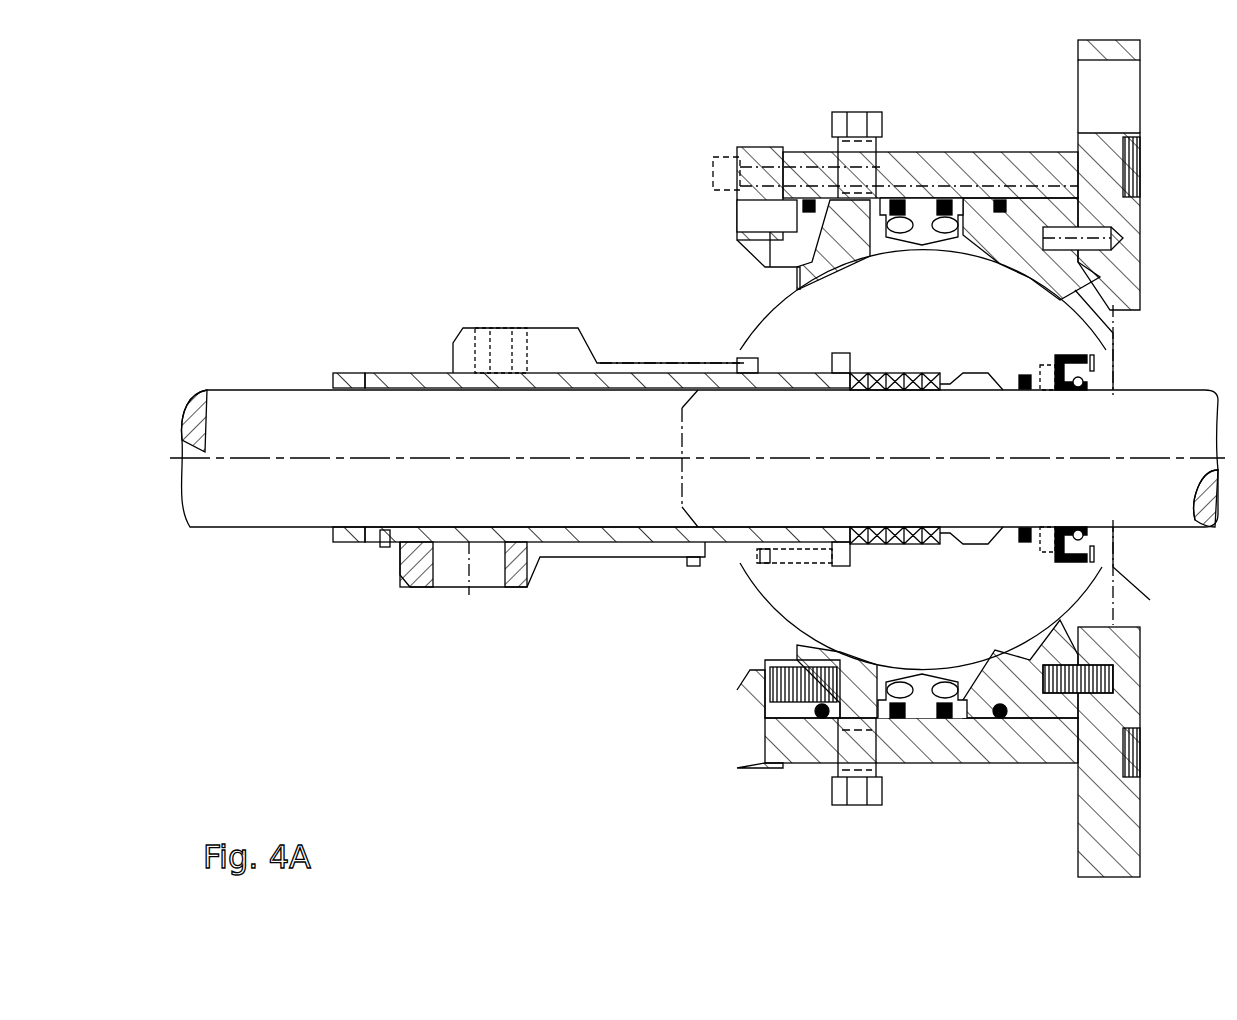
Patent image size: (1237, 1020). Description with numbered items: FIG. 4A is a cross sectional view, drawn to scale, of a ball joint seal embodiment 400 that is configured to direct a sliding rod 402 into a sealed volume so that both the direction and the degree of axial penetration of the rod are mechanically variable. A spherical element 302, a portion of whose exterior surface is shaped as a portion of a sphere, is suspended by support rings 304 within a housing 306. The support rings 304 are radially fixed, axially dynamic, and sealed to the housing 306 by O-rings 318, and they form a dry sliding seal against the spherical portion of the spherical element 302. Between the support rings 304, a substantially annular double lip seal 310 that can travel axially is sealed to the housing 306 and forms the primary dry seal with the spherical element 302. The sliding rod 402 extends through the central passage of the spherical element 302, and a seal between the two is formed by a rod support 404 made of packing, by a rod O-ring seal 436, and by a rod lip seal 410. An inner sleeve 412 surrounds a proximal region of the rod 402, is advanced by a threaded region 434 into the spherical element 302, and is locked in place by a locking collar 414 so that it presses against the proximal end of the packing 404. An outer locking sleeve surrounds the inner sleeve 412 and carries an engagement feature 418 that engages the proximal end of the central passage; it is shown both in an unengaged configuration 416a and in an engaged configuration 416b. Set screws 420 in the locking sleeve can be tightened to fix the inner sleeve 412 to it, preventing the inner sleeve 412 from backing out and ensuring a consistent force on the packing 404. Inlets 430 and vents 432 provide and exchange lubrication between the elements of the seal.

The ball joint seal embodiment 400 is at (687, 127).
The sliding rod 402 is at (697, 458).
The rod support 404 is at (897, 546).
The rod lip seal 410 is at (1095, 540).
The inner sleeve 412 is at (400, 373).
The locking collar 414 is at (340, 373).
The locking sleeve in unengaged configuration 416a is at (407, 587).
The locking sleeve in engaged configuration 416b is at (592, 330).
The engagement feature 418 is at (695, 566).
The set screws 420 is at (502, 328).
The inlets 430 is at (860, 808).
The vents 432 is at (847, 112).
The threaded region 434 is at (802, 563).
The rod O-ring seal 436 is at (1027, 546).
The spherical element 302 is at (923, 460).
The support rings 304 is at (1087, 292).
The housing 306 is at (1005, 152).
The double lip seal 310 is at (927, 200).
The O-rings 318 is at (1112, 680).